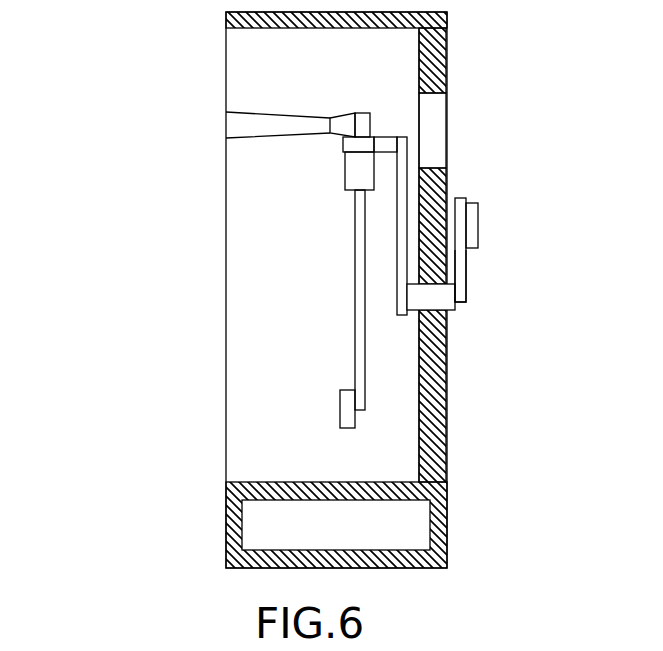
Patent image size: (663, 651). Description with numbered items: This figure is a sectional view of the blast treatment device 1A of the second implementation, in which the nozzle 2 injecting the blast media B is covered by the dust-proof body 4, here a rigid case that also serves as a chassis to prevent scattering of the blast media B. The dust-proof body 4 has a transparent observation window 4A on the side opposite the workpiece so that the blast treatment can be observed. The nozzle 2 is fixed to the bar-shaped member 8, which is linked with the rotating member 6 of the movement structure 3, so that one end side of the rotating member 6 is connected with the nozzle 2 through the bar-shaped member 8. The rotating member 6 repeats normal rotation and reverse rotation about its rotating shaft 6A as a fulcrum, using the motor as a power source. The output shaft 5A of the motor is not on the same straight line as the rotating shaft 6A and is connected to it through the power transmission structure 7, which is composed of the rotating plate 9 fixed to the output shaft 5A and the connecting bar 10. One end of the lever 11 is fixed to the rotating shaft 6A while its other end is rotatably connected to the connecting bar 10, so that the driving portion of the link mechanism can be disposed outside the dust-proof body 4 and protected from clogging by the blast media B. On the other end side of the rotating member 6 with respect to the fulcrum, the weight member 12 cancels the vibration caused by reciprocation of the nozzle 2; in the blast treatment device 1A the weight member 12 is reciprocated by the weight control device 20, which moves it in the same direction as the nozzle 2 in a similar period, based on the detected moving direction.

The blast treatment device 1A is at (127, 78).
The blast media B is at (240, 112).
The nozzle 2 is at (357, 113).
The movement structure 3 is at (402, 138).
The dust-proof body 4 is at (447, 60).
The transparent observation window 4A is at (447, 135).
The output shaft 5A is at (449, 210).
The rotating member 6 is at (403, 316).
The rotating shaft 6A is at (447, 312).
The power transmission structure 7 is at (547, 160).
The bar-shaped member 8 is at (343, 143).
The rotating plate 9 is at (461, 198).
The connecting bar 10 is at (478, 222).
The lever 11 is at (466, 277).
The weight member 12 is at (340, 412).
The weight control device 20 is at (347, 192).